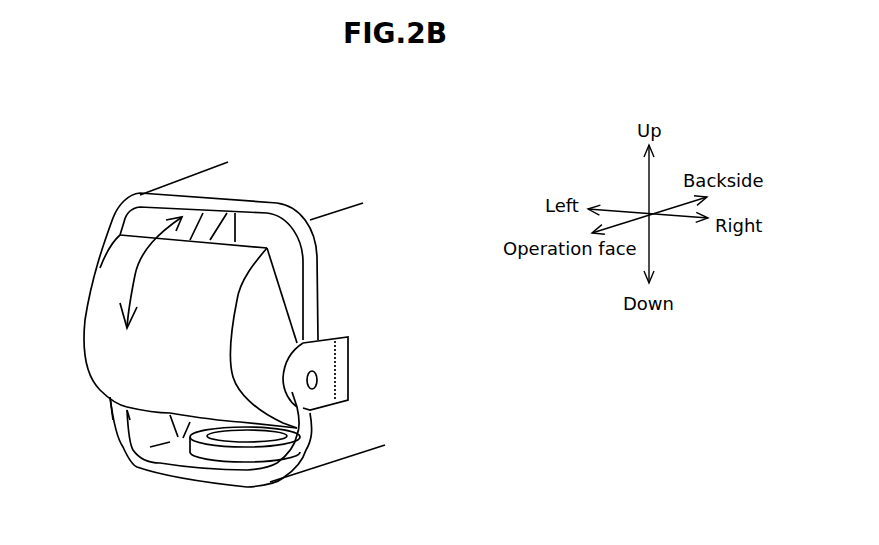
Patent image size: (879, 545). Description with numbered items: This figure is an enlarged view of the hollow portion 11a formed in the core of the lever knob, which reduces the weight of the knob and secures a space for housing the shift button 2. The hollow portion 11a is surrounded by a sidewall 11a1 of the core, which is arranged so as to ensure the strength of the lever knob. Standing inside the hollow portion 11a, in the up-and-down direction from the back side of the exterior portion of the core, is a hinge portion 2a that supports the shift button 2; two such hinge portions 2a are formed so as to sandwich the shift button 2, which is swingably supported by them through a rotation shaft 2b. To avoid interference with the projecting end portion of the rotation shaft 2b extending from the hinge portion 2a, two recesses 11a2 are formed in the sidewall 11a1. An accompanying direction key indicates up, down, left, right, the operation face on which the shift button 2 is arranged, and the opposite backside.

The shift button 2 is at (253, 315).
The hinge portion 2a is at (360, 453).
The rotation shaft 2b is at (317, 378).
The hollow portion 11a is at (280, 250).
The sidewall 11a1 is at (203, 182).
The recess 11a2 is at (323, 360).